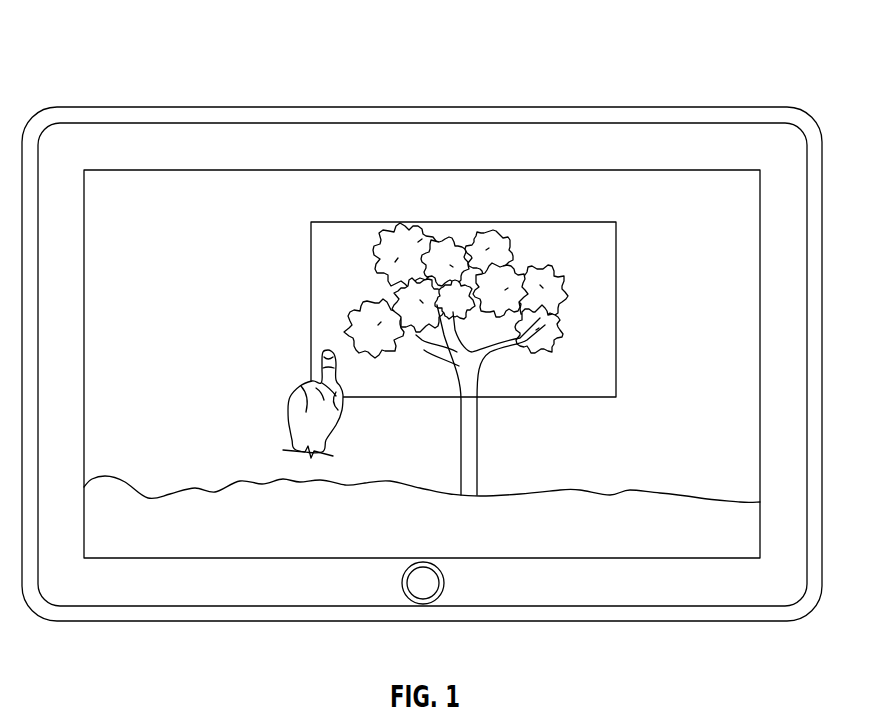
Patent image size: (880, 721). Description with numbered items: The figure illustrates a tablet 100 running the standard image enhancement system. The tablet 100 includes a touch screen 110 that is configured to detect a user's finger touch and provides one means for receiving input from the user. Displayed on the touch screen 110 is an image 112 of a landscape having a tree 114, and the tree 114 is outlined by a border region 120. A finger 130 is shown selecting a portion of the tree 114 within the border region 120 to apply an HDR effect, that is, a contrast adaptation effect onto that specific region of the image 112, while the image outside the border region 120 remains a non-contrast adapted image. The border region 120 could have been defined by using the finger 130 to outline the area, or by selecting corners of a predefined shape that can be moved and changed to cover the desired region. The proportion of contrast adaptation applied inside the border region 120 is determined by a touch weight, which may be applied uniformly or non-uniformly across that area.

The tablet 100 is at (748, 44).
The touch screen 110 is at (148, 170).
The image 112 is at (740, 328).
The tree 114 is at (500, 255).
The border region 120 is at (372, 222).
The finger 130 is at (288, 396).